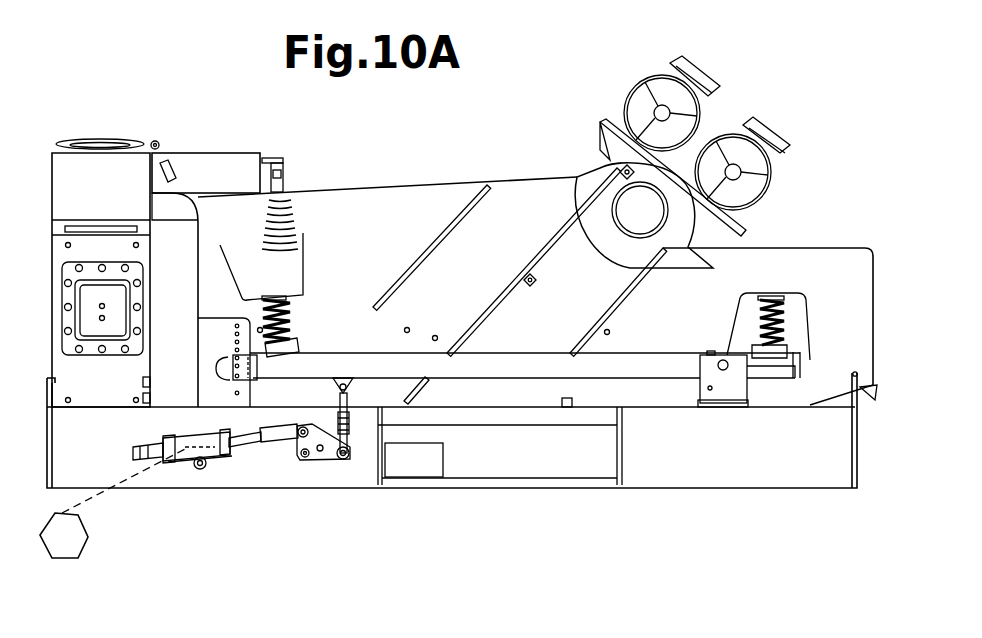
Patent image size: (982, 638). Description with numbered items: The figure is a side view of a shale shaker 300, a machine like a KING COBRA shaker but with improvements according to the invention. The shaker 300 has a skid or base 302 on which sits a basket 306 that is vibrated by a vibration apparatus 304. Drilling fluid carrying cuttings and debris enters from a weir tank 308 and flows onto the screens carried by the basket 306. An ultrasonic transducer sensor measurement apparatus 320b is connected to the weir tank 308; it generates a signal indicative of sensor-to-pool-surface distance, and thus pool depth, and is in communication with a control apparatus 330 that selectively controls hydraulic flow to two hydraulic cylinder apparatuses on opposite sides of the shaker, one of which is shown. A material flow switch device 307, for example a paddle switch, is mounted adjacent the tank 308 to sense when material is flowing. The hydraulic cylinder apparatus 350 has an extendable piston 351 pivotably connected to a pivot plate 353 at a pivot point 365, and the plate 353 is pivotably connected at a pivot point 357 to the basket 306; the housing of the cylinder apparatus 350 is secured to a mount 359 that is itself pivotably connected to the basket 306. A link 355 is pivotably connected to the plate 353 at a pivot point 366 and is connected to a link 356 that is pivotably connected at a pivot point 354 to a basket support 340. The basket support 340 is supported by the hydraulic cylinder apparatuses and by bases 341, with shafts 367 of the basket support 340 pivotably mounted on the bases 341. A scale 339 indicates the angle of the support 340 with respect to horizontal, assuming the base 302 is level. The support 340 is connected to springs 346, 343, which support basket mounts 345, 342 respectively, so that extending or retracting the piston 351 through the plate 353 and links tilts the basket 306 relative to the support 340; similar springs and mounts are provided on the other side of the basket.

The shale shaker 300 is at (537, 152).
The skid or base 302 is at (720, 472).
The vibration apparatus 304 is at (713, 122).
The basket 306 is at (420, 220).
The material flow switch device 307 is at (174, 152).
The weir tank 308 is at (213, 170).
The ultrasonic transducer sensor measurement apparatus 320b is at (284, 183).
The control apparatus 330 is at (70, 542).
The scale 339 is at (223, 382).
The basket support 340 is at (643, 368).
The bases 341 is at (730, 388).
The basket mount 342 is at (733, 320).
The spring 343 is at (787, 323).
The basket mount 345 is at (306, 252).
The spring 346 is at (299, 316).
The hydraulic cylinder apparatus 350 is at (196, 454).
The extendable piston 351 is at (247, 442).
The pivot plate 353 is at (305, 458).
The pivot point 354 is at (360, 394).
The link 355 is at (353, 428).
The link 356 is at (357, 400).
The pivot point 357 is at (320, 452).
The mount 359 is at (207, 469).
The pivot point 365 is at (336, 379).
The pivot point 366 is at (347, 455).
The shafts 367 is at (700, 366).